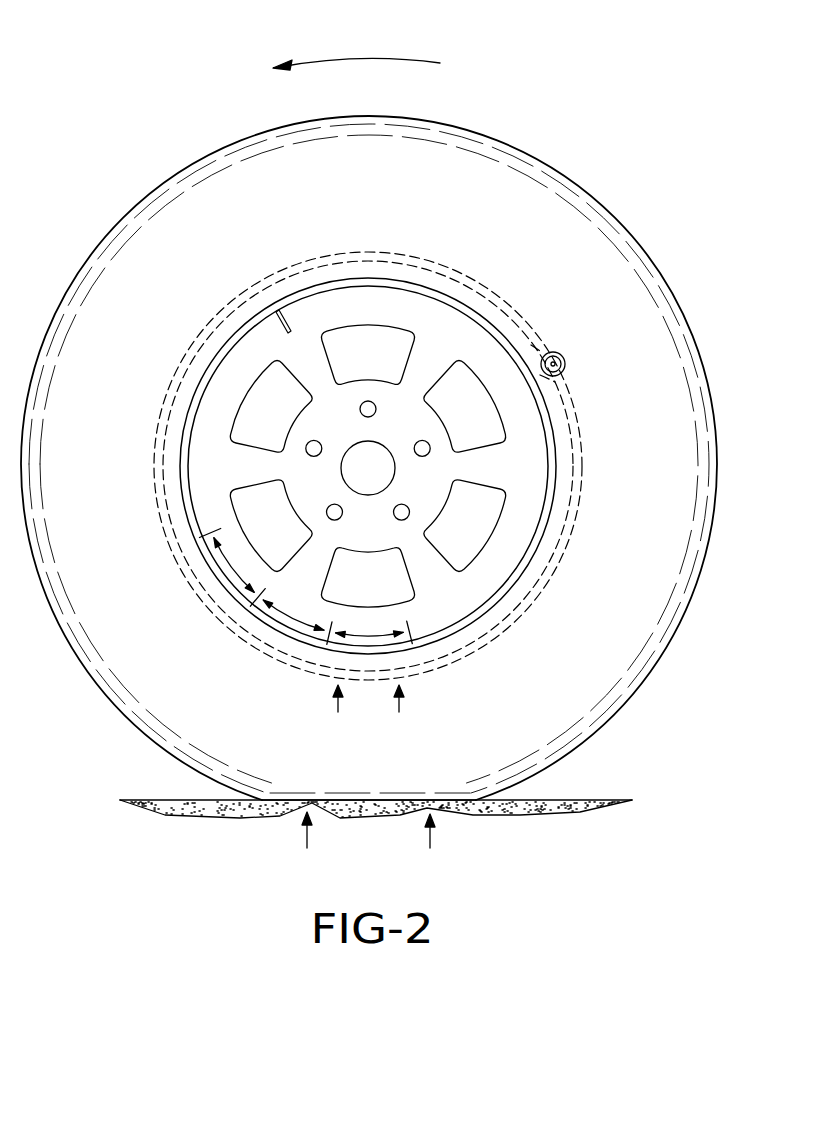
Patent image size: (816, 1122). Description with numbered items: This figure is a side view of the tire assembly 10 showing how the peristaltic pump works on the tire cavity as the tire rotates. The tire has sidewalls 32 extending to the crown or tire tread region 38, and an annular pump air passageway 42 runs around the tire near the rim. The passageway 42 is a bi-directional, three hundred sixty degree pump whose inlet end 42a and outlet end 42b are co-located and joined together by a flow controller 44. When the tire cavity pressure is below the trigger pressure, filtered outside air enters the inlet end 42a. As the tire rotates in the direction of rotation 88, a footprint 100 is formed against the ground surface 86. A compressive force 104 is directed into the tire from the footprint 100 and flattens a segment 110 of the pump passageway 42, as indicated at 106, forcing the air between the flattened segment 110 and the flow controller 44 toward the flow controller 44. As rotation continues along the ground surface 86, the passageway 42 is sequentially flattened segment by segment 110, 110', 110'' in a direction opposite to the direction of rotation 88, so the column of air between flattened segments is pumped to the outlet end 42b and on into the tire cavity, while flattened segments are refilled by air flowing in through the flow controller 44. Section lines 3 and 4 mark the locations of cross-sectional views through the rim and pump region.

The tire assembly 10 is at (80, 141).
The sidewalls 32 is at (470, 187).
The tire tread region 38 is at (574, 181).
The pump air passageway 42 is at (512, 633).
The inlet end 42a is at (567, 383).
The outlet end 42b is at (545, 343).
The flow controller 44 is at (567, 360).
The ground surface 86 is at (606, 800).
The direction of rotation 88 is at (436, 64).
The footprint 100 is at (331, 800).
The compressive force 104 is at (307, 838).
The flattening of the pump passageway segment 106 is at (338, 712).
The segment 110 is at (370, 629).
The segment 110' is at (287, 606).
The segment 110'' is at (241, 561).
The section line 3- 3 is at (404, 312).
The section line 4- 4 is at (404, 740).